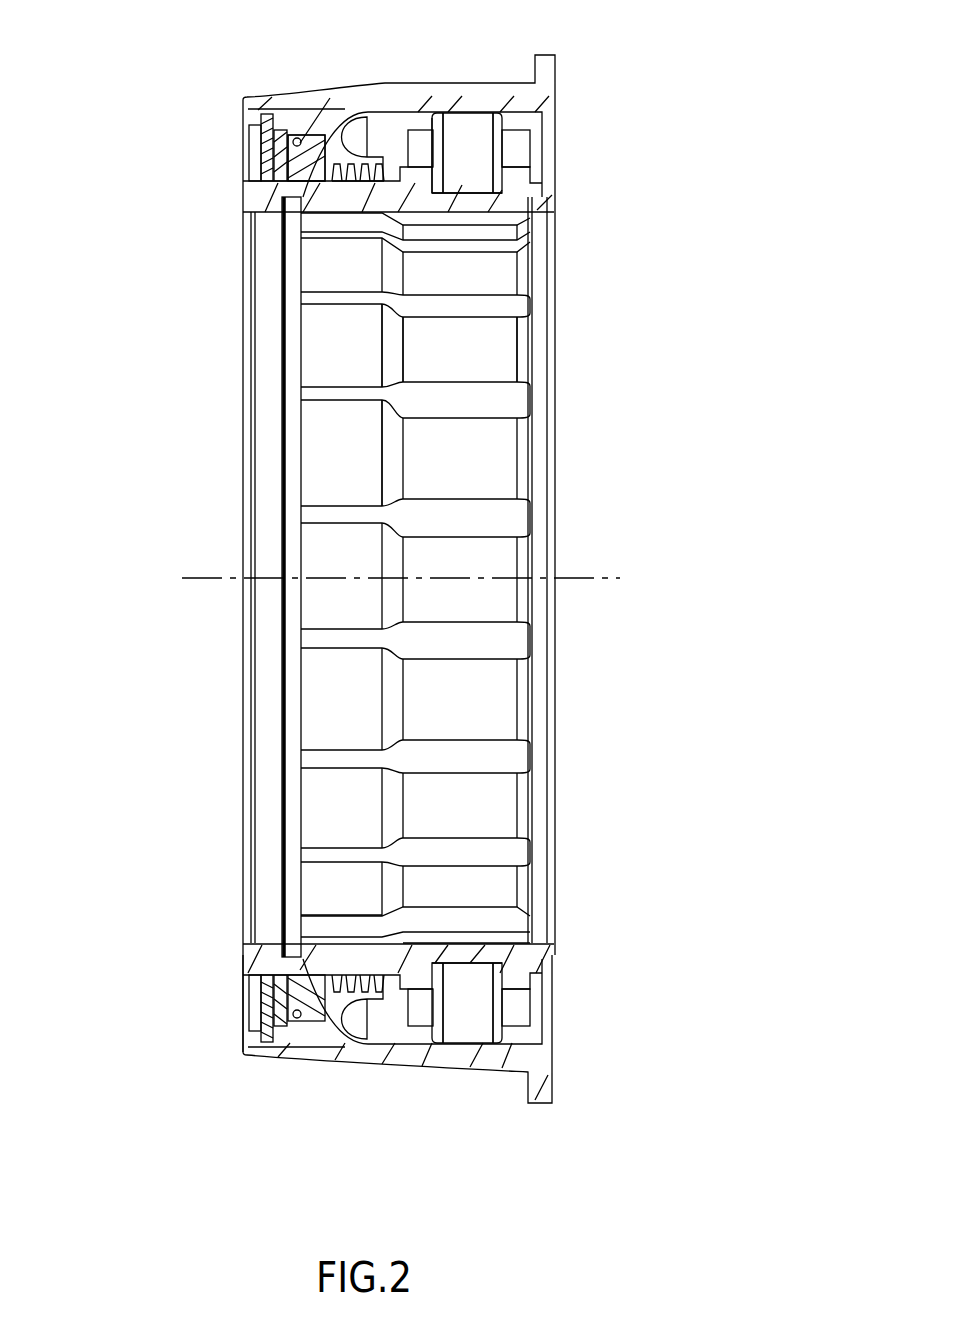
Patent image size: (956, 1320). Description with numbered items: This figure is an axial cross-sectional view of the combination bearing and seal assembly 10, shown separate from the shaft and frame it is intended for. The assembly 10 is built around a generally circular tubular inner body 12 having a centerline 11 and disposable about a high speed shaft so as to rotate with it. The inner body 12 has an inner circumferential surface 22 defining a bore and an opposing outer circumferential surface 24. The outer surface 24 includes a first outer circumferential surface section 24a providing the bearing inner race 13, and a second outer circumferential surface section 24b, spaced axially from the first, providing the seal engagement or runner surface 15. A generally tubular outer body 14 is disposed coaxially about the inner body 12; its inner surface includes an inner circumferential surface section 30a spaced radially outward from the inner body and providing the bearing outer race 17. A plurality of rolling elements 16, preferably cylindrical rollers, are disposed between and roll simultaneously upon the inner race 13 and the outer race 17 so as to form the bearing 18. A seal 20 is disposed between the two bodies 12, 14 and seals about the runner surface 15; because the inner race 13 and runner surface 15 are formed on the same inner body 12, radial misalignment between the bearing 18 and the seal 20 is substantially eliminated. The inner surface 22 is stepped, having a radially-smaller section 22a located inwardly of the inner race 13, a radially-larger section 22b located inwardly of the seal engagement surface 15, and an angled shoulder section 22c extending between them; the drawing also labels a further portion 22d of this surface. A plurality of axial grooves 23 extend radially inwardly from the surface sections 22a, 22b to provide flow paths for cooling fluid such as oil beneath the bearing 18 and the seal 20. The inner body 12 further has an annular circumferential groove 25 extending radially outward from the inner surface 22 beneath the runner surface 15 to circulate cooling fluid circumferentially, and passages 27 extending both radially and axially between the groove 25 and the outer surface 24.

The combination bearing and seal assembly 10 is at (180, 452).
The centerline 11 is at (612, 580).
The tubular inner body 12 is at (275, 265).
The bearing inner race 13 is at (474, 190).
The tubular outer body 14 is at (381, 84).
The seal engagement surface 15 is at (303, 175).
The rolling elements 16 is at (472, 123).
The bearing outer race 17 is at (452, 119).
The bearing 18 is at (537, 147).
The seal 20 is at (284, 163).
The inner circumferential surface 22 is at (492, 466).
The radially-smaller section 22a is at (479, 352).
The radially-larger section 22b is at (330, 360).
The angled shoulder section 22c is at (395, 447).
The core body section 22d is at (262, 752).
The axial grooves 23 is at (478, 305).
The outer circumferential surface 24 is at (388, 980).
The first outer circumferential surface section 24a is at (464, 980).
The second outer circumferential surface section 24b is at (300, 1012).
The circumferential groove 25 is at (290, 220).
The passages 27 is at (325, 183).
The inner circumferential surface section 30a is at (450, 1040).